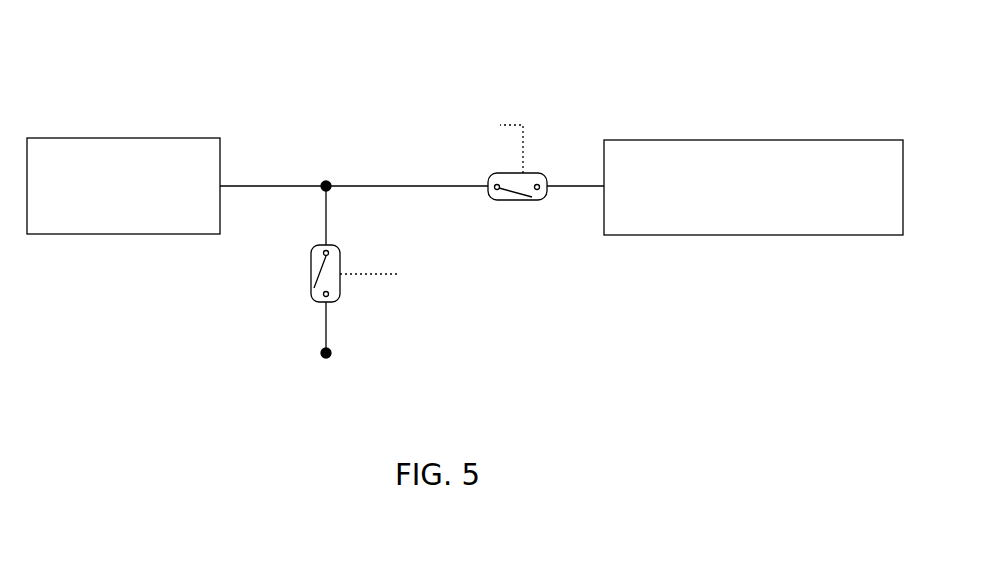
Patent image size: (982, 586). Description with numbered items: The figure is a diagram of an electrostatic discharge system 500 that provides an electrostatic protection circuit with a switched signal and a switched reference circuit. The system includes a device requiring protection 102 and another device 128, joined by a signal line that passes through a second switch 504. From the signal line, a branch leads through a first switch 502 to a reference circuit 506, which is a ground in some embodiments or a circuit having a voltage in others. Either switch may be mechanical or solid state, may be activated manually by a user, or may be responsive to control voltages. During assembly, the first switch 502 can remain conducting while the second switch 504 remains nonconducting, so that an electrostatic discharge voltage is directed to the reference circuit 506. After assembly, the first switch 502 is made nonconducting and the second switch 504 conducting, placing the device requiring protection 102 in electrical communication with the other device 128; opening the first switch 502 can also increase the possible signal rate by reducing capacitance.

The electrostatic discharge system 500 is at (472, 65).
The other device 128 is at (172, 138).
The device requiring protection 102 is at (655, 140).
The second switch 504 is at (530, 173).
The first switch 502 is at (311, 274).
The reference circuit 506 is at (331, 350).